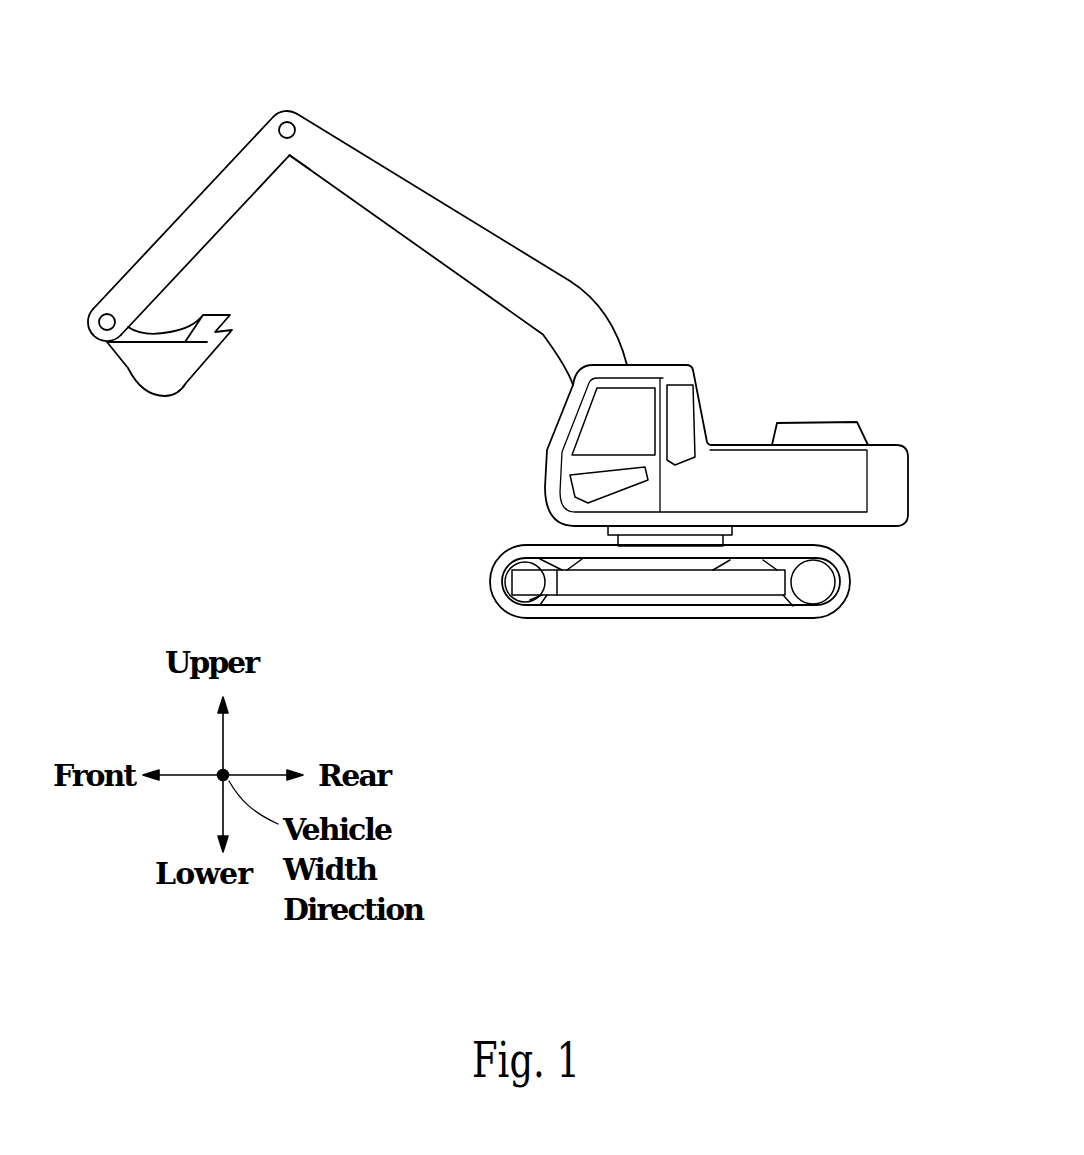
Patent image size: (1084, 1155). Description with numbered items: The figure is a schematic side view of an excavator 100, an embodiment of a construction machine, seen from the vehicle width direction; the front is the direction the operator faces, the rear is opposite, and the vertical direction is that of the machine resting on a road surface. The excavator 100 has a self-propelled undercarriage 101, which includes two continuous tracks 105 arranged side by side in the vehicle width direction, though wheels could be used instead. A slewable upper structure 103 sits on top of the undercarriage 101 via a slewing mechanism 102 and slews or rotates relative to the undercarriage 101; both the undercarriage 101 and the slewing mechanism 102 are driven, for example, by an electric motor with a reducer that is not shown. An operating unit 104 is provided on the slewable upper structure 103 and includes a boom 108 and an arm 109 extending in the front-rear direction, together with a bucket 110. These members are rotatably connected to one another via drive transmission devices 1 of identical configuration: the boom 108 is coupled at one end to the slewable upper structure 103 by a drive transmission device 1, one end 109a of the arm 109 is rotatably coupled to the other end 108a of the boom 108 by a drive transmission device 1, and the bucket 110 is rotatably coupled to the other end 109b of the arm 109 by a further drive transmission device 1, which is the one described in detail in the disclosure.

The drive transmission device 1 is at (286, 99).
The excavator 100 is at (782, 270).
The undercarriage 101 is at (490, 625).
The slewing mechanism 102 is at (732, 538).
The slewable upper structure 103 is at (887, 445).
The operating unit 104 is at (375, 122).
The continuous track 105 is at (747, 619).
The boom 108 is at (448, 210).
The other end of the boom 108a is at (289, 156).
The arm 109 is at (173, 210).
The one end of the arm 109a is at (247, 124).
The other end of the arm 109b is at (99, 303).
The bucket 110 is at (188, 383).